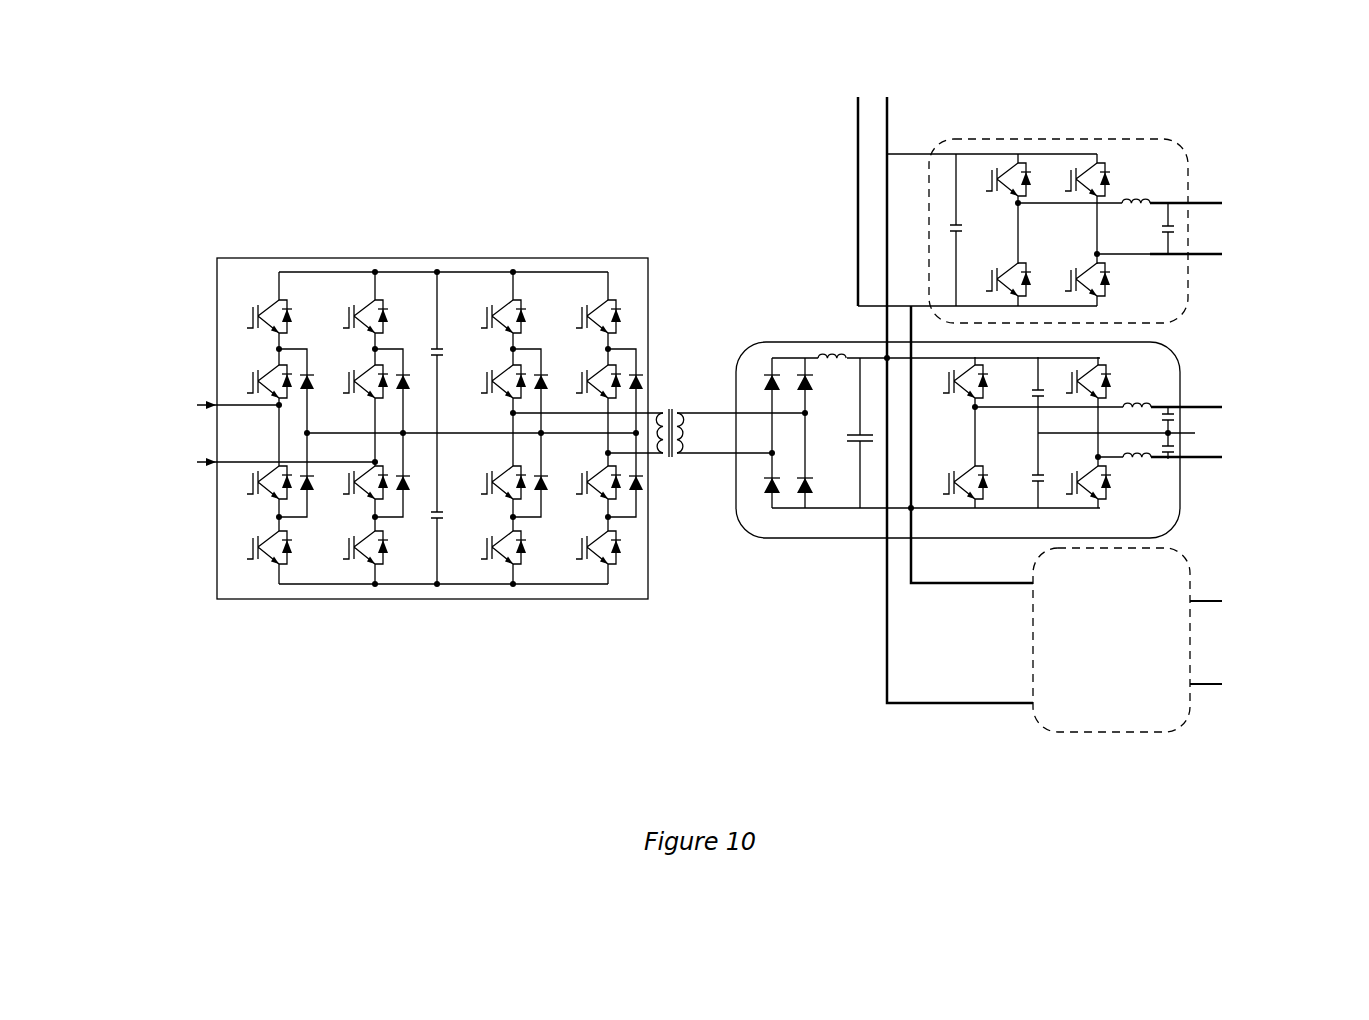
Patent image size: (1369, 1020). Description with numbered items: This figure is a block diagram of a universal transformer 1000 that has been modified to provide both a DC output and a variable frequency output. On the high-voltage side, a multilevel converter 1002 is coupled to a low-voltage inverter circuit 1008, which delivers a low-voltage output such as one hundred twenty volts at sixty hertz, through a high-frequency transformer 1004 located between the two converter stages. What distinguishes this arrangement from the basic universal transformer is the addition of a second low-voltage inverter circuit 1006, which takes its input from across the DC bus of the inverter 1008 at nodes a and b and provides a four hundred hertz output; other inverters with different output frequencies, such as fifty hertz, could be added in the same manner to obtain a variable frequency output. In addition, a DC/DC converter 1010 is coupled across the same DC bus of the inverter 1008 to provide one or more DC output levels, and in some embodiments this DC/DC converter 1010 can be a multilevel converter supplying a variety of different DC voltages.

The universal transformer 1000 is at (672, 69).
The multilevel converter 1002 is at (647, 258).
The high-frequency transformer 1004 is at (676, 465).
The second low-voltage inverter circuit 1006 is at (1186, 152).
The low-voltage inverter circuit 1008 is at (1180, 351).
The DC/DC converter 1010 is at (1190, 557).